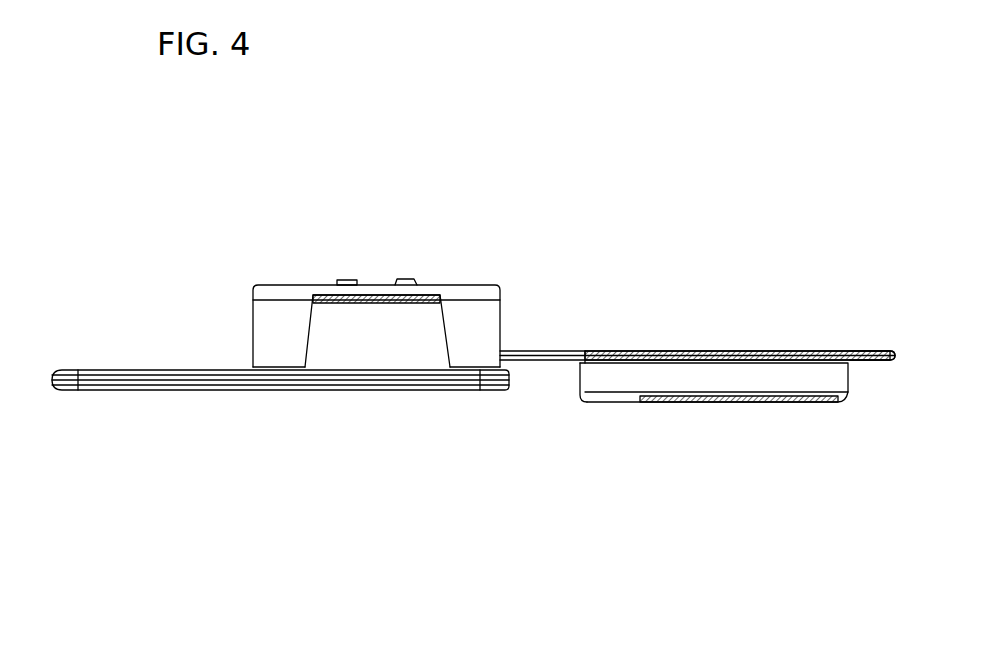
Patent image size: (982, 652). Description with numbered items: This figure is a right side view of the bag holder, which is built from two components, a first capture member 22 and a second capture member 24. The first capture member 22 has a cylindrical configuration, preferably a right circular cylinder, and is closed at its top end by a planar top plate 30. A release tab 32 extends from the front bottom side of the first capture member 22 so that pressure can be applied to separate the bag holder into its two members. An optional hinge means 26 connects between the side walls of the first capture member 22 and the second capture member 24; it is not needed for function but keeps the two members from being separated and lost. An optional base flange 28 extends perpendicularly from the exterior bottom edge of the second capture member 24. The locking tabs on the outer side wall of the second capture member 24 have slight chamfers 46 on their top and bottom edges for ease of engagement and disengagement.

The first capture member 22 is at (577, 380).
The second capture member 24 is at (263, 269).
The hinge means 26 is at (697, 387).
The base flange 28 is at (155, 388).
The top plate 30 is at (639, 479).
The release tab 32 is at (870, 362).
The chamfers 46 is at (405, 281).